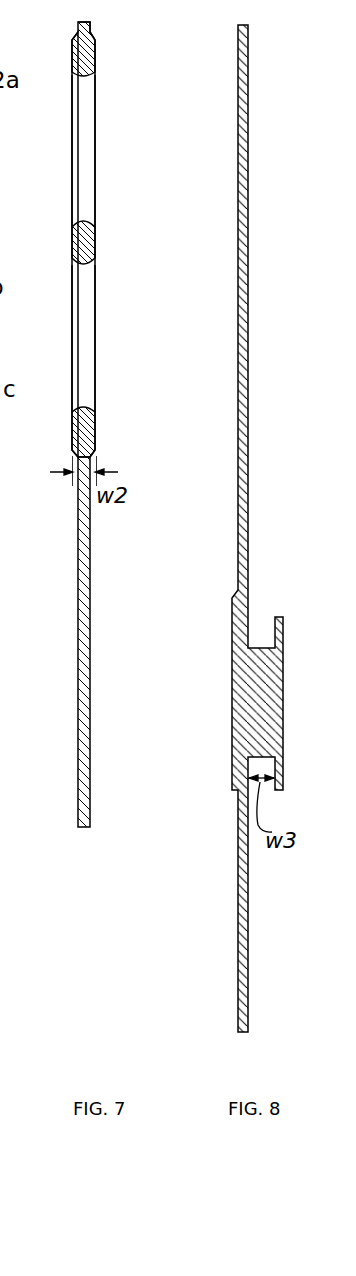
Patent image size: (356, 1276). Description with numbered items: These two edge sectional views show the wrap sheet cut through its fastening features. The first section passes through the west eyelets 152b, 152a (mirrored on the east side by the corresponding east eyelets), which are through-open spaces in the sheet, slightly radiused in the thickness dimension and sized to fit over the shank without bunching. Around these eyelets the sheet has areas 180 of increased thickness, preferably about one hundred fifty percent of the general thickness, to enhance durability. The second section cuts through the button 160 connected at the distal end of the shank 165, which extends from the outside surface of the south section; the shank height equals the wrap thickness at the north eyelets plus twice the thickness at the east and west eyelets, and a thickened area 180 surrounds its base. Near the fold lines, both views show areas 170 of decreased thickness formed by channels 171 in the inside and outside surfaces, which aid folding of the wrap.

In FIG. 7, the areas of increased thickness 180 is at (67, 44).
In FIG. 8, the areas of increased thickness 180 is at (228, 593).
In FIG. 7, the west eyelet 152a is at (87, 103).
In FIG. 7, the west eyelet 152b is at (85, 318).
In FIG. 7, the channels 171 is at (58, 713).
In FIG. 8, the channels 171 is at (220, 148).
In FIG. 7, the areas of decreased thickness 170 is at (100, 757).
In FIG. 8, the areas of decreased thickness 170 is at (257, 25).
In FIG. 8, the shank 165 is at (257, 646).
In FIG. 8, the button 160 is at (285, 683).